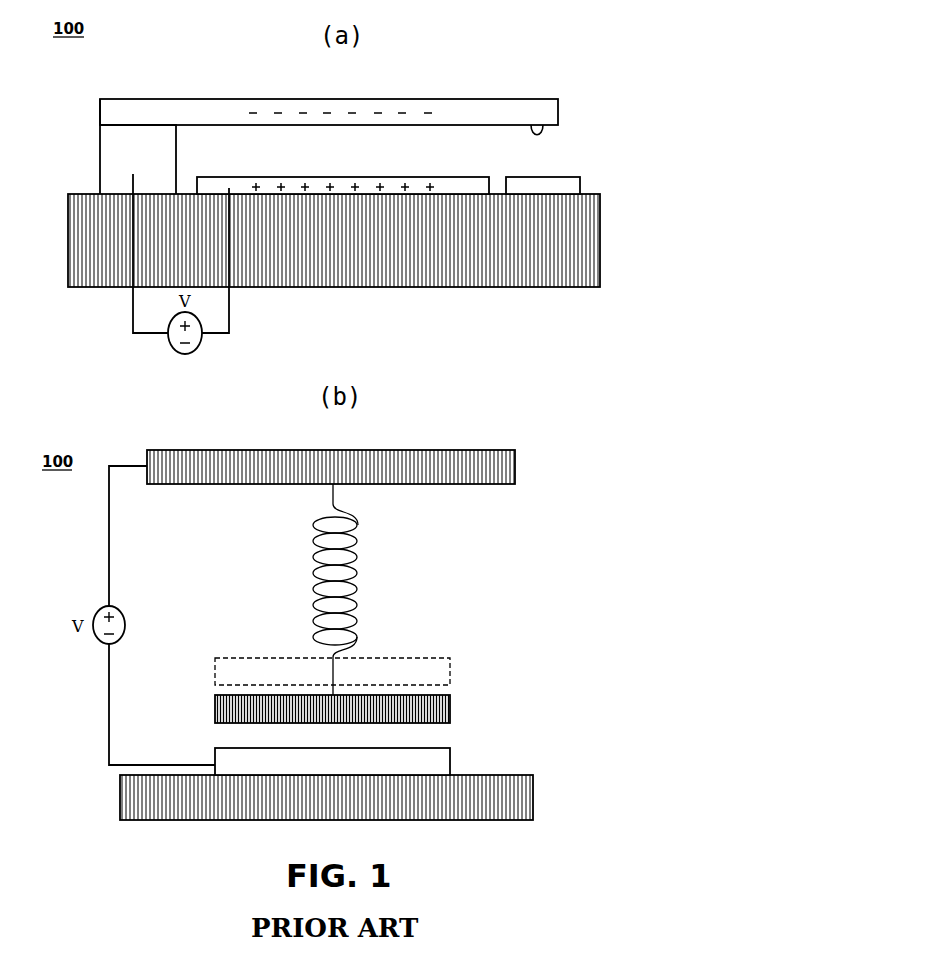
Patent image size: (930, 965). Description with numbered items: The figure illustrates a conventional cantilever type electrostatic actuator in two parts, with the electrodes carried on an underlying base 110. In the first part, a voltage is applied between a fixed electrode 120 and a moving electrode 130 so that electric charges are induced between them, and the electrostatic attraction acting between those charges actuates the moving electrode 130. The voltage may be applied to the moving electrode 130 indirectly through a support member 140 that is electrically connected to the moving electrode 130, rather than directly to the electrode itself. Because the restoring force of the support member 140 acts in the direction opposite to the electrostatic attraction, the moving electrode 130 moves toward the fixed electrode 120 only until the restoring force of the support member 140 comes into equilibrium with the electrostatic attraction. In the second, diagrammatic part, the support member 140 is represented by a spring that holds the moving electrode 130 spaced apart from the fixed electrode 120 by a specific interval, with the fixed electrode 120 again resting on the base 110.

The substrate 110 is at (308, 262).
The fixed electrode 120 is at (418, 185).
The moving electrode 130 is at (483, 112).
The support member 140 is at (122, 160).